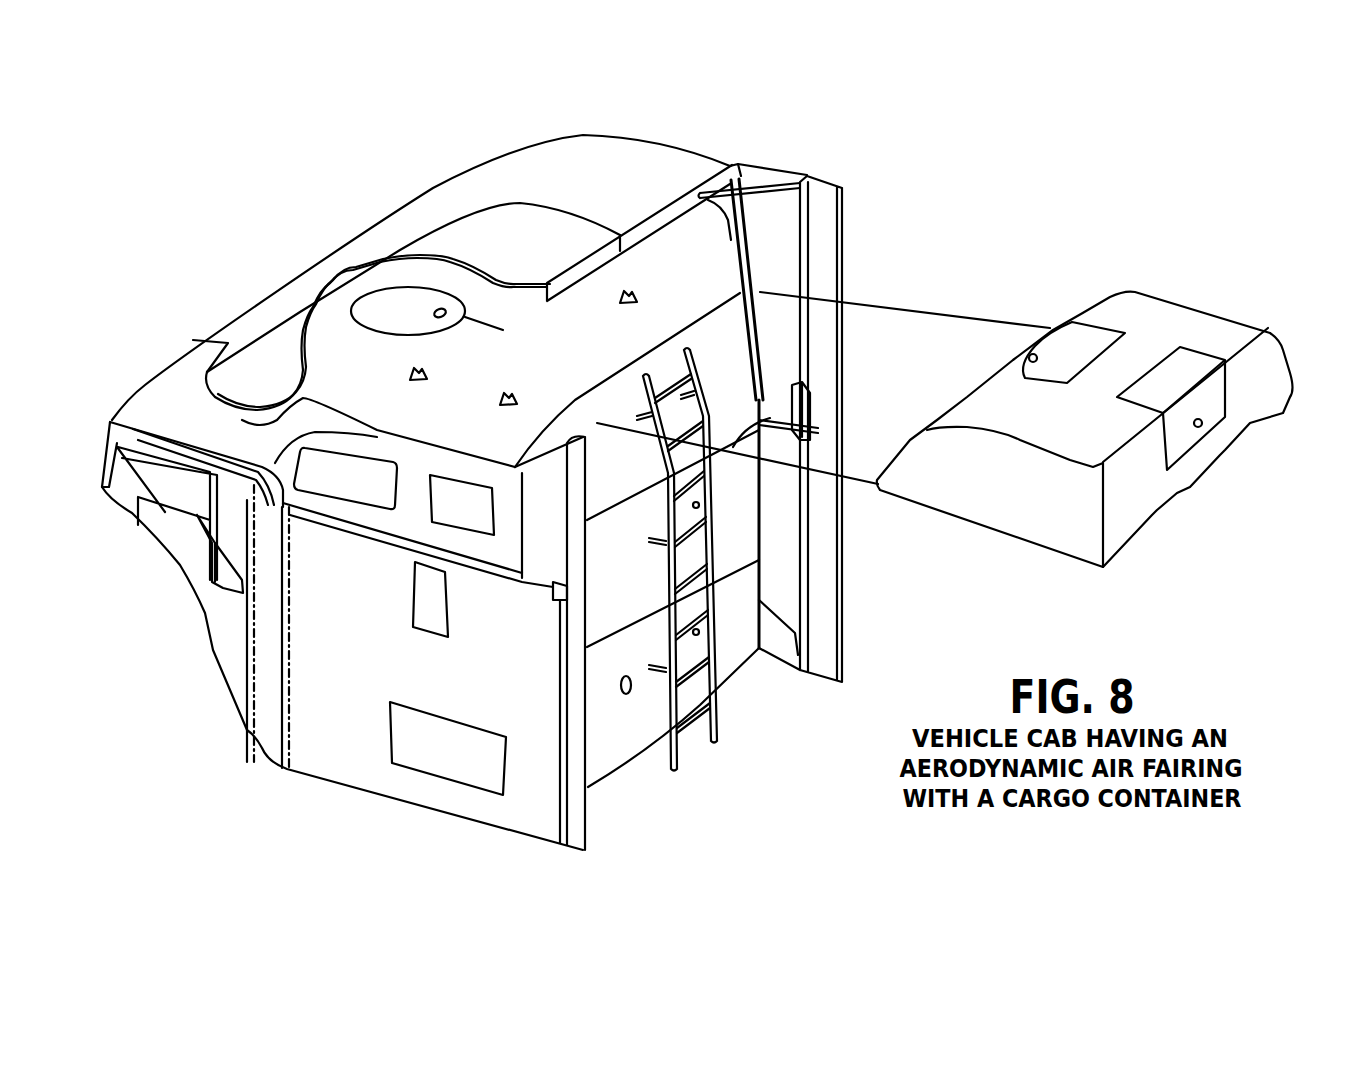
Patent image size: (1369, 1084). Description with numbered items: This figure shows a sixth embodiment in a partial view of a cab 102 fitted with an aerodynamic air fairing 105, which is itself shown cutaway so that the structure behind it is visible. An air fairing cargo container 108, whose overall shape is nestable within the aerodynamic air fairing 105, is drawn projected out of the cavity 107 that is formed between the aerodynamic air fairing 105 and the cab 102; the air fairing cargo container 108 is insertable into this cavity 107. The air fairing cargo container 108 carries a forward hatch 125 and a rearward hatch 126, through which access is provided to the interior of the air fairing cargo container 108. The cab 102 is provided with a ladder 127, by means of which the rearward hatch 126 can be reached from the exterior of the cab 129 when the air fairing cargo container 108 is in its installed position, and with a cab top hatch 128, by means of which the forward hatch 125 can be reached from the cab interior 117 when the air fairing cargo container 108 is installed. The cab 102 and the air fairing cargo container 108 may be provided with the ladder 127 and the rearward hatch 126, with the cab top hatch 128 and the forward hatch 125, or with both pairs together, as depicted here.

The cab 102 is at (397, 797).
The aerodynamic air fairing 105 is at (433, 188).
The cavity 107 is at (637, 287).
The air fairing cargo container 108 is at (1120, 551).
The cab interior 117 is at (210, 610).
The forward hatch 125 is at (1060, 338).
The rearward hatch 126 is at (1172, 372).
The ladder 127 is at (720, 613).
The cab top hatch 128 is at (383, 303).
The exterior of the cab 129 is at (823, 787).